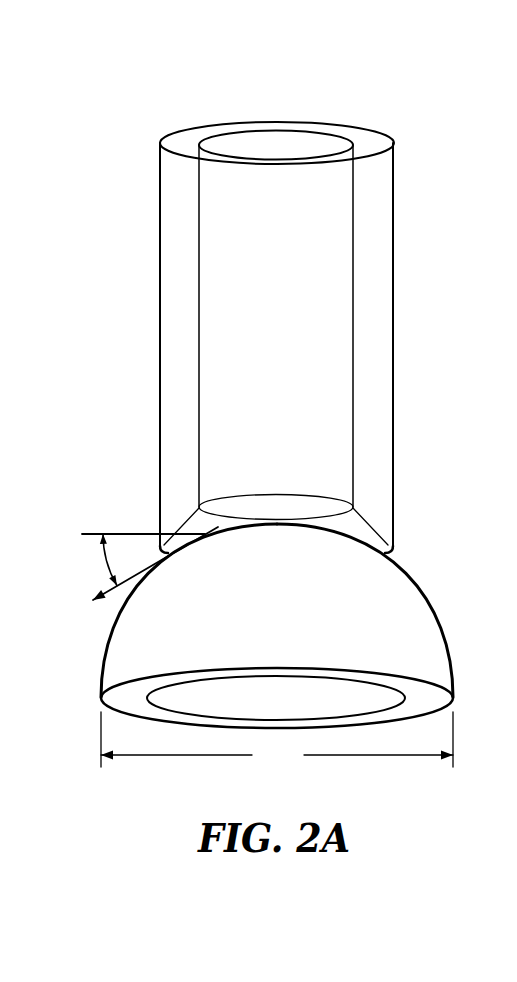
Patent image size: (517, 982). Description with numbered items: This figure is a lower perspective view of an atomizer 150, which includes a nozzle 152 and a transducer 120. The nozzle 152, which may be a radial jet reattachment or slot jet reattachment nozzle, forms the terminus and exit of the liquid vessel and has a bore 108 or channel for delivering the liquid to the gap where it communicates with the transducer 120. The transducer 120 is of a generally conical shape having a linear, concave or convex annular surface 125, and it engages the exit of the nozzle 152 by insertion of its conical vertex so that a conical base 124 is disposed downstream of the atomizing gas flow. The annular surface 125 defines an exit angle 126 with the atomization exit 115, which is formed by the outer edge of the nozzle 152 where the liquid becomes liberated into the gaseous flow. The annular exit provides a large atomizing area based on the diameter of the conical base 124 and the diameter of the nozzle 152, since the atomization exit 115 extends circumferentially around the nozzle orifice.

The atomizer 150 is at (222, 105).
The nozzle 152 is at (393, 207).
The bore 108 is at (286, 148).
The atomization exit 115 is at (390, 553).
The transducer 120 is at (297, 641).
The annular surface 125 is at (442, 622).
The exit angle 126 is at (102, 566).
The conical base 124 is at (290, 768).